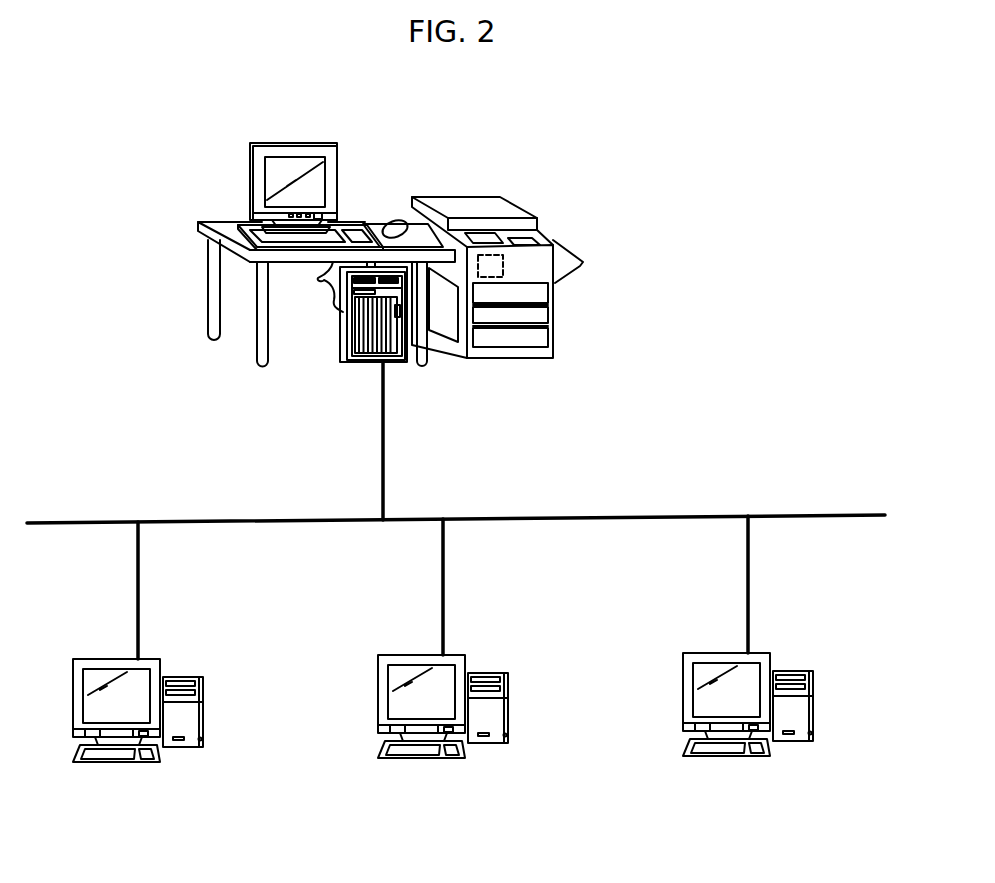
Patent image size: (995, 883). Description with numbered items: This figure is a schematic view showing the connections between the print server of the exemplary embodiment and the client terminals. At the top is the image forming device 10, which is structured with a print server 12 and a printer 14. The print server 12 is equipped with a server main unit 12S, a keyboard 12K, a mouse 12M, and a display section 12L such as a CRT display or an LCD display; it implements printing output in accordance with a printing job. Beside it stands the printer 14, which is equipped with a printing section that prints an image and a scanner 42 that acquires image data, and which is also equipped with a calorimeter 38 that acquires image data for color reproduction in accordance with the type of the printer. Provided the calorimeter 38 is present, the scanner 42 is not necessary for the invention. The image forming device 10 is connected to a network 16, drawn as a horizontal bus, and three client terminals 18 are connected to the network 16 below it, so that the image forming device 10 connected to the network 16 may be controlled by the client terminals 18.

The image forming device 10 is at (450, 140).
The print server 12 is at (305, 137).
The display section 12L is at (272, 173).
The keyboard 12K is at (243, 227).
The mouse 12M is at (392, 221).
The server main unit 12S is at (343, 349).
The printer 14 is at (518, 198).
The scanner 42 is at (463, 206).
The calorimeter 38 is at (503, 265).
The network 16 is at (701, 515).
The client terminals 18 is at (443, 745).